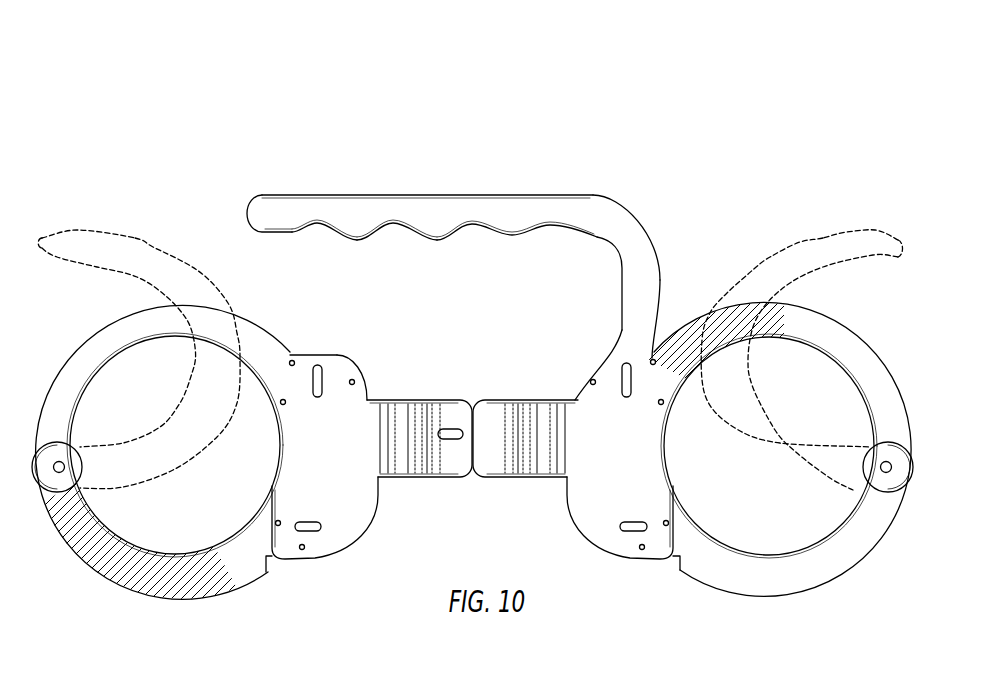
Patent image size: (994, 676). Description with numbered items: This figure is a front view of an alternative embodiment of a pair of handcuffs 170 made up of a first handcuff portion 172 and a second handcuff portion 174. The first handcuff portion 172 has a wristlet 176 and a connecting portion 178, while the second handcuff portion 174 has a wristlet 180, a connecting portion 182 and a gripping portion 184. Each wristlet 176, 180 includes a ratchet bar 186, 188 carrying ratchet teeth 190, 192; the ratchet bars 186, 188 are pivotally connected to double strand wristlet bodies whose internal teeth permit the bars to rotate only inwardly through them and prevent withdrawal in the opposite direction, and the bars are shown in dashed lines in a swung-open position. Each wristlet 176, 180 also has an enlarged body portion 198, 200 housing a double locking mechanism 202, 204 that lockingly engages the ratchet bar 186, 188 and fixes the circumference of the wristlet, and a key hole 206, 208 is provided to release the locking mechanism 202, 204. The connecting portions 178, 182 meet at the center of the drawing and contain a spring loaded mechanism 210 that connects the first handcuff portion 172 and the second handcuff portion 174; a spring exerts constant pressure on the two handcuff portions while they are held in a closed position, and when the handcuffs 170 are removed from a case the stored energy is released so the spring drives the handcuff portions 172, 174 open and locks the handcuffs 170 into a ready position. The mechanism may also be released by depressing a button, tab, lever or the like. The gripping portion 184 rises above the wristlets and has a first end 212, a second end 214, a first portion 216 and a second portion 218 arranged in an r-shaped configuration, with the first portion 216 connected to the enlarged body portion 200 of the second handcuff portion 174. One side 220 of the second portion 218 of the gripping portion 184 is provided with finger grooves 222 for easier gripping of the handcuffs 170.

The handcuffs 170 is at (617, 80).
The first handcuff portion 172 is at (355, 523).
The second handcuff portion 174 is at (583, 520).
The wristlet 176 is at (98, 345).
The connecting portion 178 is at (427, 458).
The wristlet 180 is at (833, 560).
The connecting portion 182 is at (532, 462).
The gripping portion 184 is at (514, 224).
The ratchet bar 186 is at (62, 242).
The ratchet bar 188 is at (828, 238).
The ratchet teeth 190 is at (137, 238).
The ratchet teeth 192 is at (873, 230).
The enlarged body portion 198 is at (337, 393).
The enlarged body portion 200 is at (643, 487).
The double locking mechanism 202 is at (318, 367).
The double locking mechanism 204 is at (624, 368).
The key hole 206 is at (313, 530).
The key hole 208 is at (643, 528).
The spring loaded mechanism 210 is at (452, 428).
The first end 212 is at (653, 307).
The second end 214 is at (262, 208).
The first portion 216 is at (630, 225).
The second portion 218 is at (421, 220).
The side 220 is at (327, 227).
The finger grooves 222 is at (503, 237).